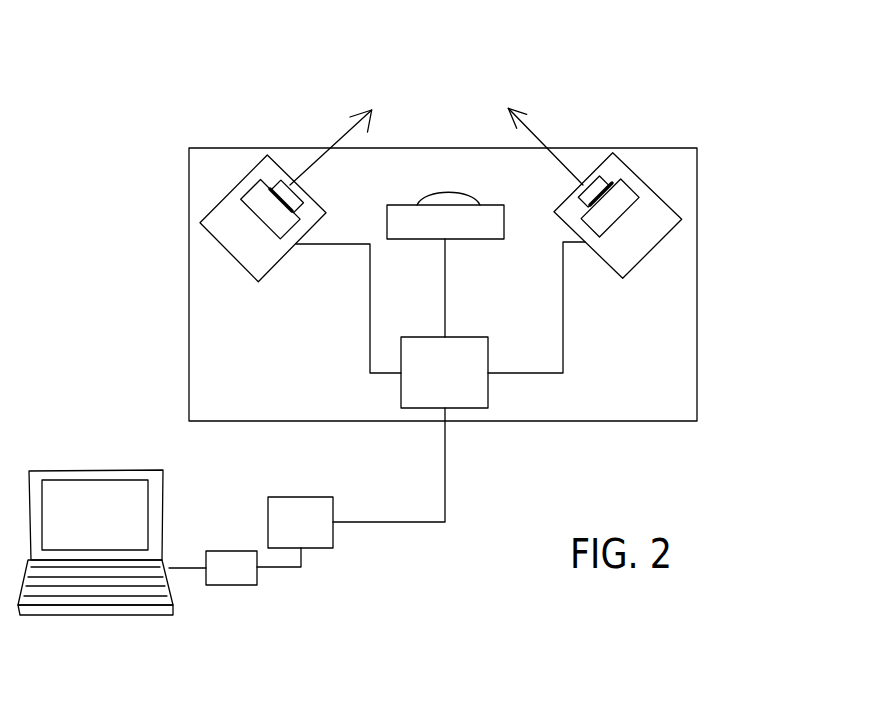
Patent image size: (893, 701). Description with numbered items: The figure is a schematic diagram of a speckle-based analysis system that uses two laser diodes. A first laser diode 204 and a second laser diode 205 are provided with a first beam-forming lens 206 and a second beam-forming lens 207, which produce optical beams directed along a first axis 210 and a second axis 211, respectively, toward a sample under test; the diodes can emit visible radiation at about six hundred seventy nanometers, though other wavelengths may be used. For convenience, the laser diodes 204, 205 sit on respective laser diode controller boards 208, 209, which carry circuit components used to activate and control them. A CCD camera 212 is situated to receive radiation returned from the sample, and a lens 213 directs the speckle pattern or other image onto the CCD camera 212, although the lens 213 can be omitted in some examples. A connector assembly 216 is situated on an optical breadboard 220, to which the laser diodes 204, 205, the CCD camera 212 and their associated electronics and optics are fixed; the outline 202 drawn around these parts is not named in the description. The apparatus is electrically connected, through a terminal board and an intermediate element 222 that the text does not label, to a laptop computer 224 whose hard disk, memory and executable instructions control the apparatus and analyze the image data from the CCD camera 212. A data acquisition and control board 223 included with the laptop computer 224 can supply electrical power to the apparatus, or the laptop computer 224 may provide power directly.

The sensor unit housing 202 is at (697, 208).
The first laser diode 204 is at (637, 193).
The second laser diode 205 is at (241, 186).
The first beam-forming lens 206 is at (607, 182).
The second beam-forming lens 207 is at (287, 176).
The laser diode controller board 208 is at (652, 248).
The laser diode controller board 209 is at (230, 255).
The first axis 210 is at (560, 153).
The second axis 211 is at (313, 170).
The CCD camera 212 is at (504, 220).
The lens 213 is at (448, 192).
The connector assembly 216 is at (488, 390).
The optical breadboard 220 is at (697, 343).
The interface module 222 is at (317, 551).
The data acquisition and control board 223 is at (244, 585).
The laptop computer 224 is at (95, 615).